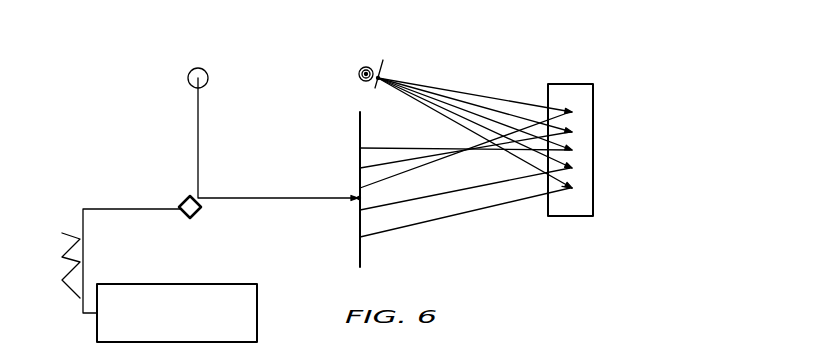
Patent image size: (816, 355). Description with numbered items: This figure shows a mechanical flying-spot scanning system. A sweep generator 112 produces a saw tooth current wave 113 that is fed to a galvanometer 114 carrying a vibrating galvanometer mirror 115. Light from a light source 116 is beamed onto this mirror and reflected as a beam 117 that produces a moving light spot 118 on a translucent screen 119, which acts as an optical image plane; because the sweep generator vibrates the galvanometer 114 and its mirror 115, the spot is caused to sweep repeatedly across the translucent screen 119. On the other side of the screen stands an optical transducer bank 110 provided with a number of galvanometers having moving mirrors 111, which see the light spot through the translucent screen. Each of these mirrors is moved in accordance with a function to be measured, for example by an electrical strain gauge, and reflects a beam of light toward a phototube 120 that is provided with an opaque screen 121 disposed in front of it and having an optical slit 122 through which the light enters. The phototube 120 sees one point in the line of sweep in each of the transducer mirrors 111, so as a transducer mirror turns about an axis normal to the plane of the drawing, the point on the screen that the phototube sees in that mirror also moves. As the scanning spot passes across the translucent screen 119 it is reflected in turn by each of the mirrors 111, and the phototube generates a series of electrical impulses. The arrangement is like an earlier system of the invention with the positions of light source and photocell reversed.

The optical transducer bank 110 is at (596, 205).
The moving mirrors 111 is at (574, 188).
The sweep generator 112 is at (177, 313).
The saw tooth current wave 113 is at (60, 253).
The galvanometer 114 is at (190, 197).
The vibrating galvanometer mirror 115 is at (215, 240).
The light source 116 is at (222, 82).
The beam 117 is at (306, 163).
The light spot 118 is at (355, 201).
The translucent screen 119 is at (365, 259).
The phototube 120 is at (363, 66).
The opaque screen 121 is at (375, 90).
The optical slit 122 is at (383, 71).